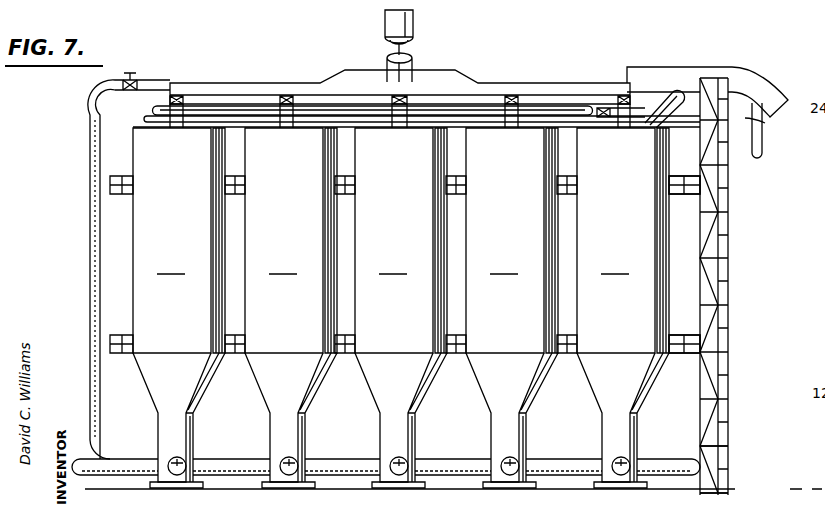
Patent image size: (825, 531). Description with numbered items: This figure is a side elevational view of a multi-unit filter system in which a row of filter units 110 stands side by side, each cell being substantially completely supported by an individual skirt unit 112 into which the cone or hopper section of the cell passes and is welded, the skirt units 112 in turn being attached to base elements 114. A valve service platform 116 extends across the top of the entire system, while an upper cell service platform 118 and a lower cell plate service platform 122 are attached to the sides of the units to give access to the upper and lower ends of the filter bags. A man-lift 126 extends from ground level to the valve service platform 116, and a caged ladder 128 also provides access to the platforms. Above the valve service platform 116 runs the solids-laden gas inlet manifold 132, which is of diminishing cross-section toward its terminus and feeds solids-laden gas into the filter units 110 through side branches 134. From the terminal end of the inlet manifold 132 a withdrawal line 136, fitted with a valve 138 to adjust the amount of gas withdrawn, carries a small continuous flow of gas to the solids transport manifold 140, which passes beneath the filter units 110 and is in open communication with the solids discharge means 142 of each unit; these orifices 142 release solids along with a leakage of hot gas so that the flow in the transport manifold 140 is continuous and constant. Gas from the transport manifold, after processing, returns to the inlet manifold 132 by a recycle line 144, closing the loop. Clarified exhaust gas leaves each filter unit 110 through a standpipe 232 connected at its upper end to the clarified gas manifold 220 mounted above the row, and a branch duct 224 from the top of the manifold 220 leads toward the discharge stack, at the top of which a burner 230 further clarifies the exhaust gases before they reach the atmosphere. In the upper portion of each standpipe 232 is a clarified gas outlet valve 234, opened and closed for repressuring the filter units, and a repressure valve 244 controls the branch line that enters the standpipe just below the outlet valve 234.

The filter unit 110 is at (405, 240).
The skirt unit 112 is at (178, 425).
The base element 114 is at (282, 488).
The valve service platform 116 is at (386, 128).
The upper cell service platform 118 is at (688, 195).
The lower cell plate service platform 122 is at (688, 337).
The man-lift 126 is at (725, 280).
The caged ladder 128 is at (728, 447).
The solids-laden gas inlet manifold 132 is at (587, 77).
The side branch 134 is at (665, 93).
The withdrawal line 136 is at (165, 83).
The valve 138 is at (135, 82).
The solids transport manifold 140 is at (117, 468).
The solids discharge means 142 is at (185, 459).
The recycle line 144 is at (760, 134).
The clarified gas manifold 220 is at (222, 84).
The branch duct 224 is at (412, 64).
The burner 230 is at (408, 22).
The standpipe 232 is at (178, 130).
The clarified gas outlet valve 234 is at (170, 101).
The repressure valve 244 is at (593, 119).